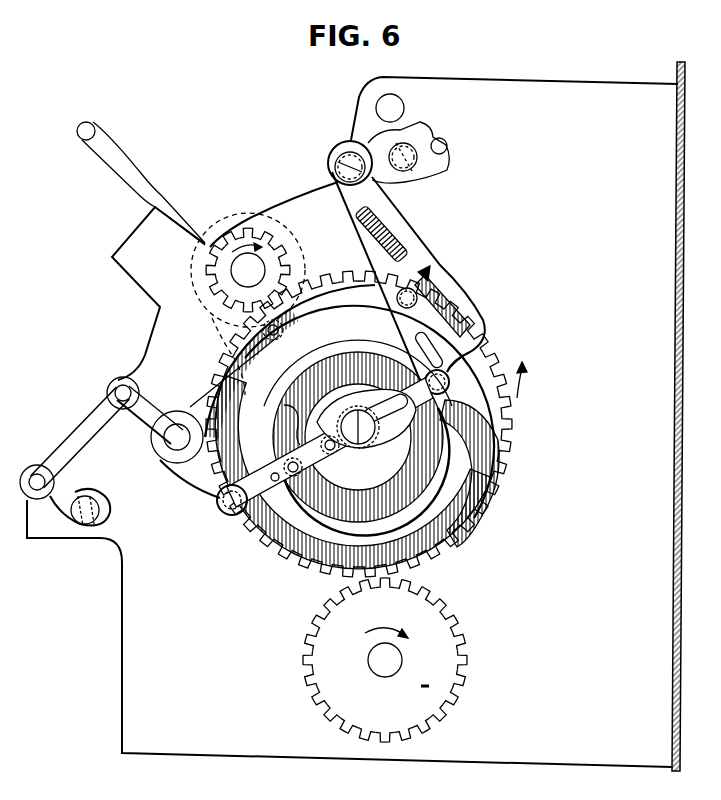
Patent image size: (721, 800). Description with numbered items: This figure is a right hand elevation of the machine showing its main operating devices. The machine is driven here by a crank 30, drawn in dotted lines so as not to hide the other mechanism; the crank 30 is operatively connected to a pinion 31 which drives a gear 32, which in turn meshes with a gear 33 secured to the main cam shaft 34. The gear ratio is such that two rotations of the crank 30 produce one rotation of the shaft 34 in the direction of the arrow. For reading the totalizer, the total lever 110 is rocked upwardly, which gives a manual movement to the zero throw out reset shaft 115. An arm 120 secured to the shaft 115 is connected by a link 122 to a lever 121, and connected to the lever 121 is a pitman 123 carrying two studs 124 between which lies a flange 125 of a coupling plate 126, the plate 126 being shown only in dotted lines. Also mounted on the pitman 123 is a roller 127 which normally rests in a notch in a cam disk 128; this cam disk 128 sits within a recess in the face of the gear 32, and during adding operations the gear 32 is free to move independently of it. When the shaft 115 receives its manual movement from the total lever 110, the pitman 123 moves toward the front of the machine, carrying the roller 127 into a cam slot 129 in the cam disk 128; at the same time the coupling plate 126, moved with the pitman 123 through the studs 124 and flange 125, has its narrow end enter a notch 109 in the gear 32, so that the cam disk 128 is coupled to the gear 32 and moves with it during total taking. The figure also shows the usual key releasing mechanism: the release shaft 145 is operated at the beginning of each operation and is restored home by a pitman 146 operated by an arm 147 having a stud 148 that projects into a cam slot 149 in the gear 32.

The crank 30 is at (200, 299).
The pinion 31 is at (248, 228).
The gear 32 is at (513, 443).
The gear 33 is at (458, 628).
The main cam shaft 34 is at (382, 670).
The notch 109 is at (263, 513).
The total lever 110 is at (130, 183).
The zero throw out reset shaft 115 is at (99, 512).
The arm 120 is at (77, 492).
The lever 121 is at (192, 483).
The link 122 is at (80, 428).
The pitman 123 is at (378, 443).
The studs 124 is at (277, 487).
The flange 125 is at (280, 440).
The coupling plate 126 is at (293, 425).
The roller 127 is at (336, 451).
The cam disk 128 is at (349, 325).
The cam slot 129 is at (443, 446).
The release shaft 145 is at (412, 165).
The pitman 146 is at (396, 216).
The arm 147 is at (195, 395).
The stud 148 is at (267, 343).
The cam slot 149 is at (480, 348).